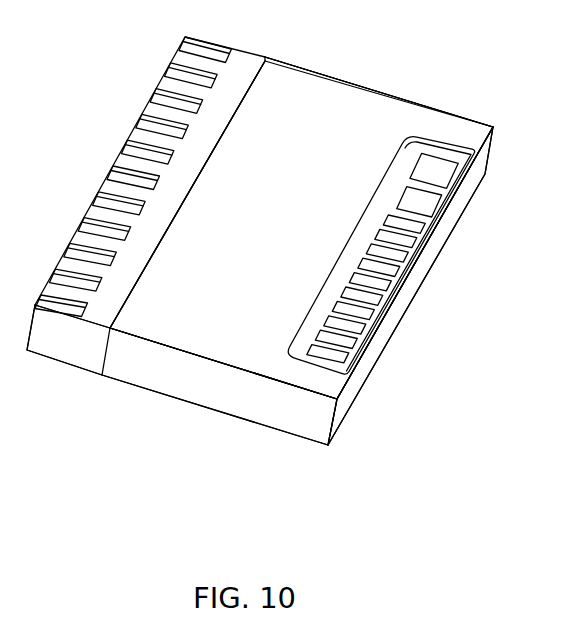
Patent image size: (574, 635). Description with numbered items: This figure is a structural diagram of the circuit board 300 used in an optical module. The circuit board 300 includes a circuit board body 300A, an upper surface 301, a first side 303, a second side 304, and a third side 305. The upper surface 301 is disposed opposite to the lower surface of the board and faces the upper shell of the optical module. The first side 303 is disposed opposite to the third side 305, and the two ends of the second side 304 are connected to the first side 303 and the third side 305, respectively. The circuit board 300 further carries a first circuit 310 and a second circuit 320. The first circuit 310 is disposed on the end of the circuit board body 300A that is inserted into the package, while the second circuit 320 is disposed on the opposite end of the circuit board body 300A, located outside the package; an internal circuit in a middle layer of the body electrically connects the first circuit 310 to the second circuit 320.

The circuit board 300 is at (433, 16).
The circuit board body 300A is at (352, 58).
The upper surface 301 is at (358, 122).
The first side 303 is at (197, 378).
The second side 304 is at (372, 357).
The third side 305 is at (467, 115).
The first circuit 310 is at (355, 257).
The second circuit 320 is at (115, 190).